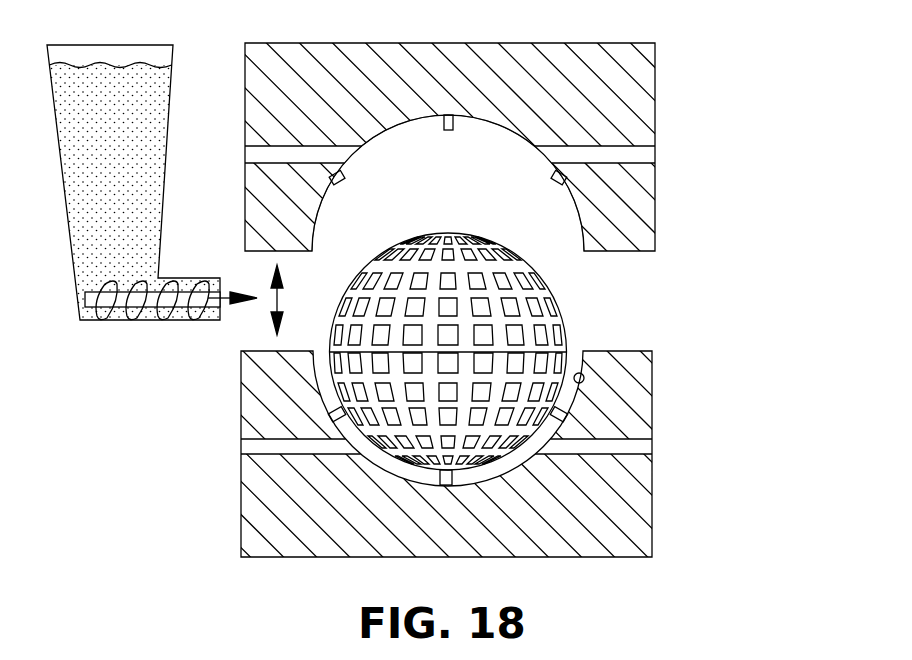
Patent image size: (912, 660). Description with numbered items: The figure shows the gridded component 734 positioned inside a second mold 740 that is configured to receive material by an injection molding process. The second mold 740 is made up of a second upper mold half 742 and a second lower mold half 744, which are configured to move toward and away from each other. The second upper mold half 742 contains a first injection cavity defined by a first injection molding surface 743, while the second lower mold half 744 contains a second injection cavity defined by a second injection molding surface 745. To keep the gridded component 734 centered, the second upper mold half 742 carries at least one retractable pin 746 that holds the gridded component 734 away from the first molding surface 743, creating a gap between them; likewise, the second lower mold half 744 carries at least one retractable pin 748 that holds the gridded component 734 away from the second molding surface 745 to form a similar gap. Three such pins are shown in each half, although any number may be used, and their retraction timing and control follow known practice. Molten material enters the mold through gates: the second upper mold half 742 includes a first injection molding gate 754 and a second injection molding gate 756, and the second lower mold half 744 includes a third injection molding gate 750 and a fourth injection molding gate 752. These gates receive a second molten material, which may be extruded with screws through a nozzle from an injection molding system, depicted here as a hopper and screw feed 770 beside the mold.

The second mold 740 is at (446, 305).
The second upper mold half 742 is at (637, 68).
The second lower mold half 744 is at (642, 513).
The first injection molding surface 743 is at (578, 210).
The second injection molding surface 745 is at (584, 380).
The retractable pin 746 is at (450, 131).
The retractable pin 748 is at (437, 485).
The third injection molding gate 750 is at (632, 445).
The fourth injection molding gate 752 is at (248, 444).
The first injection molding gate 754 is at (642, 157).
The second injection molding gate 756 is at (267, 156).
The gridded component 734 is at (566, 333).
The hopper with feed screw 770 is at (82, 206).